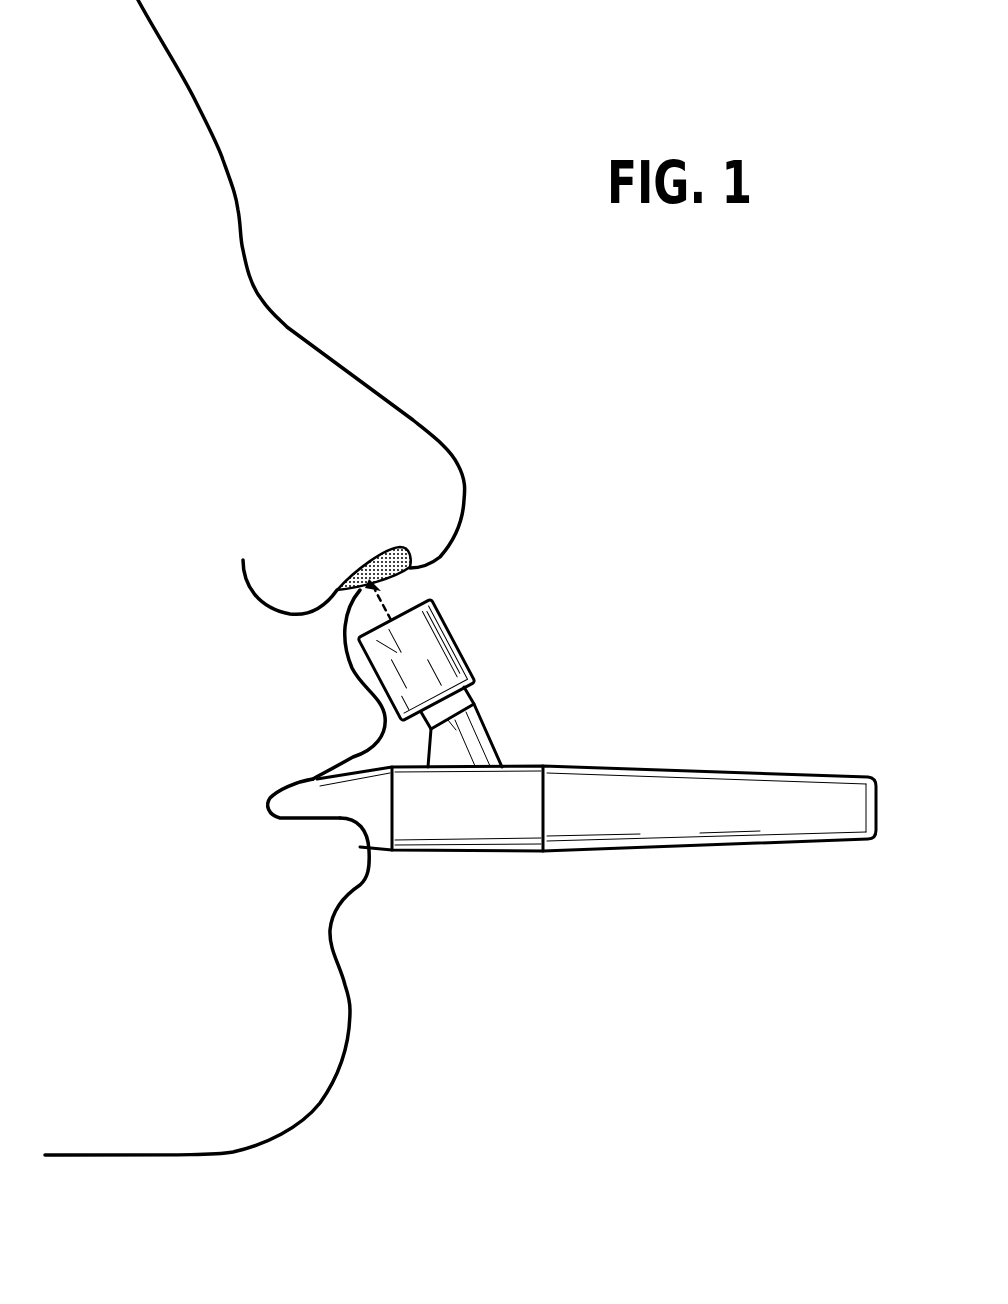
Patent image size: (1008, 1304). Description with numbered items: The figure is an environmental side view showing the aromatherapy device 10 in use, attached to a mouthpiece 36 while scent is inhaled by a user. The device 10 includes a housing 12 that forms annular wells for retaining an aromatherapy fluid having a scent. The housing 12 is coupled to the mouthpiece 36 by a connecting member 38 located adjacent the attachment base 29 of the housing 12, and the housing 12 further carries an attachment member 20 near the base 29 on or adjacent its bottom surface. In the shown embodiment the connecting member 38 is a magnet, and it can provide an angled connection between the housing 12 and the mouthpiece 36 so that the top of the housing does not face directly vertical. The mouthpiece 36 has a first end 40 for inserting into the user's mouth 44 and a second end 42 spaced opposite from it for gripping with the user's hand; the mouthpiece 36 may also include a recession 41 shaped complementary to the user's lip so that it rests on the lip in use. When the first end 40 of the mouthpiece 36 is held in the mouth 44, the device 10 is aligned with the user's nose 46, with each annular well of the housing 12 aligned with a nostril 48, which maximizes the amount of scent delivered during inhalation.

The aromatherapy device 10 is at (461, 622).
The housing 12 is at (464, 647).
The attachment member 20 is at (470, 695).
The attachment base 29 is at (444, 718).
The mouthpiece 36 is at (596, 816).
The connecting member 38 is at (480, 743).
The first end 40 is at (311, 776).
The recession 41 is at (310, 828).
The second end 42 is at (832, 792).
The user's mouth 44 is at (282, 784).
The user's nose 46 is at (456, 451).
The nostril 48 is at (374, 546).